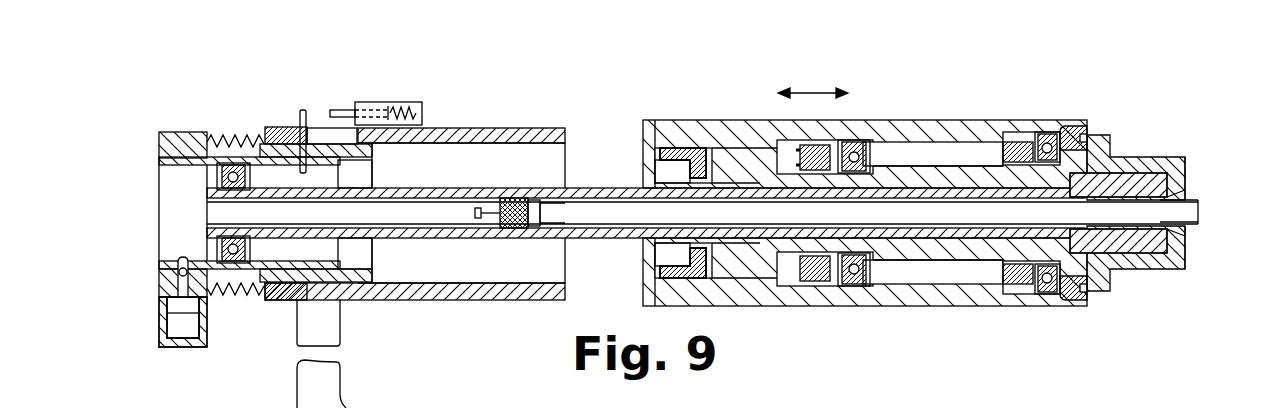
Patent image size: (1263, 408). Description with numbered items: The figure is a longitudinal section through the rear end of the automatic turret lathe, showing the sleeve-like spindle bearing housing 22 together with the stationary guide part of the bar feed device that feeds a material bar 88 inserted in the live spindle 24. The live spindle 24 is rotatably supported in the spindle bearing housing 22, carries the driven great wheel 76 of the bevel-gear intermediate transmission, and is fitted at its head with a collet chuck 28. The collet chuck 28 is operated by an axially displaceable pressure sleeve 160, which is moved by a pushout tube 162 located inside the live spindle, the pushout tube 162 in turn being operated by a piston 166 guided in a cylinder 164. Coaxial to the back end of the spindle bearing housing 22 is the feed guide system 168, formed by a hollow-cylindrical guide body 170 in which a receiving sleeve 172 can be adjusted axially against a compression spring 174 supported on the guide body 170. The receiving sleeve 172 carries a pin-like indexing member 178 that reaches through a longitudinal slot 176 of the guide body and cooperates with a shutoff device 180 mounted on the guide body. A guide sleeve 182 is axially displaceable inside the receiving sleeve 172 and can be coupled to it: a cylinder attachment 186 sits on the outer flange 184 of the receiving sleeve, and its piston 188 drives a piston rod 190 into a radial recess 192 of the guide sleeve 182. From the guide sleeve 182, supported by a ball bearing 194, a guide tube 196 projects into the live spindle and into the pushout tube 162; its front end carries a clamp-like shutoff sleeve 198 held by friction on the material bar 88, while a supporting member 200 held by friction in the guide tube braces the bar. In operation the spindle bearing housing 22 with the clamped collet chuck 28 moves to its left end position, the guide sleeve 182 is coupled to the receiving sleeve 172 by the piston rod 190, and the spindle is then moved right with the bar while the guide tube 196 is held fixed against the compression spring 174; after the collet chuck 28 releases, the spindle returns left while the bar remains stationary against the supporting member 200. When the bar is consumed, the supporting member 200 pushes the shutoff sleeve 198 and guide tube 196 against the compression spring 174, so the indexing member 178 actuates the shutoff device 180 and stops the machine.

The spindle bearing housing 22 is at (955, 120).
The live spindle 24 is at (937, 255).
The collet chuck 28 is at (1192, 194).
The driven great wheel 76 is at (822, 272).
The material bar 88 is at (608, 216).
The pressure sleeve 160 is at (1130, 185).
The pushout tube 162 is at (745, 185).
The cylinder 164 is at (660, 175).
The piston 166 is at (686, 170).
The feed guide system 168 is at (506, 126).
The guide body 170 is at (458, 292).
The receiving sleeve 172 is at (356, 150).
The compression spring 174 is at (236, 132).
The longitudinal slot 176 is at (325, 130).
The indexing member 178 is at (302, 112).
The shutoff device 180 is at (395, 104).
The guide sleeve 182 is at (180, 168).
The outer flange 184 is at (180, 134).
The cylinder attachment 186 is at (158, 338).
The piston 188 is at (178, 305).
The piston rod 190 is at (178, 248).
The radial recess 192 is at (178, 276).
The ball bearing 194 is at (236, 265).
The guide tube 196 is at (414, 232).
The shutoff sleeve 198 is at (1078, 178).
The supporting member 200 is at (512, 232).